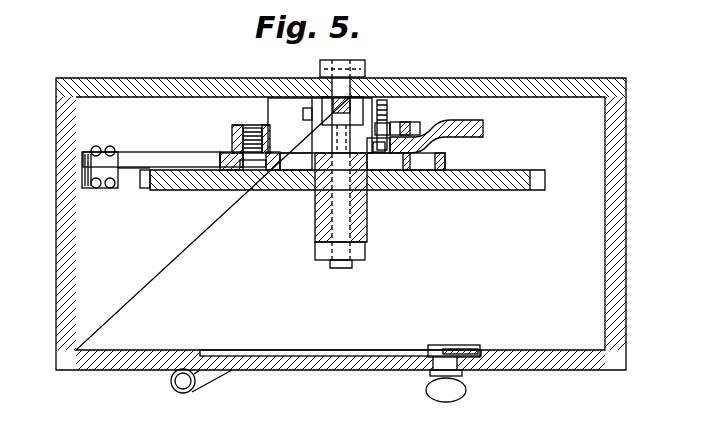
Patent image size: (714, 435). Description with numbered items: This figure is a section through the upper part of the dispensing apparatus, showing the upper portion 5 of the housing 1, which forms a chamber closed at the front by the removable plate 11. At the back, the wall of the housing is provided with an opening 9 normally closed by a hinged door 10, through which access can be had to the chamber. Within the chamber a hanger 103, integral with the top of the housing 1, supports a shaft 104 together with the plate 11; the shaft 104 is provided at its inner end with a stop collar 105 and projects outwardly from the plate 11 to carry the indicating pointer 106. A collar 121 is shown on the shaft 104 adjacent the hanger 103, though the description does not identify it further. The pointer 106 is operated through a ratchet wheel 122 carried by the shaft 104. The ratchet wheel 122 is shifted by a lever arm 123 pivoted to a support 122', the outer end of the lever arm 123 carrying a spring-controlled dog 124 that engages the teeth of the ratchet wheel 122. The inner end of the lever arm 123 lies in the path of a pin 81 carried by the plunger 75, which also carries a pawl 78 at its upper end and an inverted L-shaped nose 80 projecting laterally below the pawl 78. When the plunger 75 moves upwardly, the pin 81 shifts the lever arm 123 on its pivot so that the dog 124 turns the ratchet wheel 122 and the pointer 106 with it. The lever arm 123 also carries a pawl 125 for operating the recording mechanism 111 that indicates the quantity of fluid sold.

The housing 1 is at (337, 223).
The upper portion 5 is at (64, 240).
The opening 9 is at (216, 358).
The hinged door 10 is at (336, 364).
The removable plate 11 is at (548, 90).
The plunger 75 is at (415, 148).
The pawl 78 is at (402, 128).
The inverted L-shaped nose 80 is at (478, 121).
The pin 81 is at (410, 152).
The hanger 103 is at (360, 223).
The shaft 104 is at (340, 195).
The stop collar 105 is at (326, 246).
The indicating pointer 106 is at (360, 73).
The recording mechanism 111 is at (326, 124).
The collar 121 is at (338, 107).
The ratchet wheel 122 is at (347, 199).
The support 122' is at (224, 126).
The lever arm 123 is at (192, 143).
The spring-controlled dog 124 is at (131, 178).
The pawl 125 is at (386, 122).